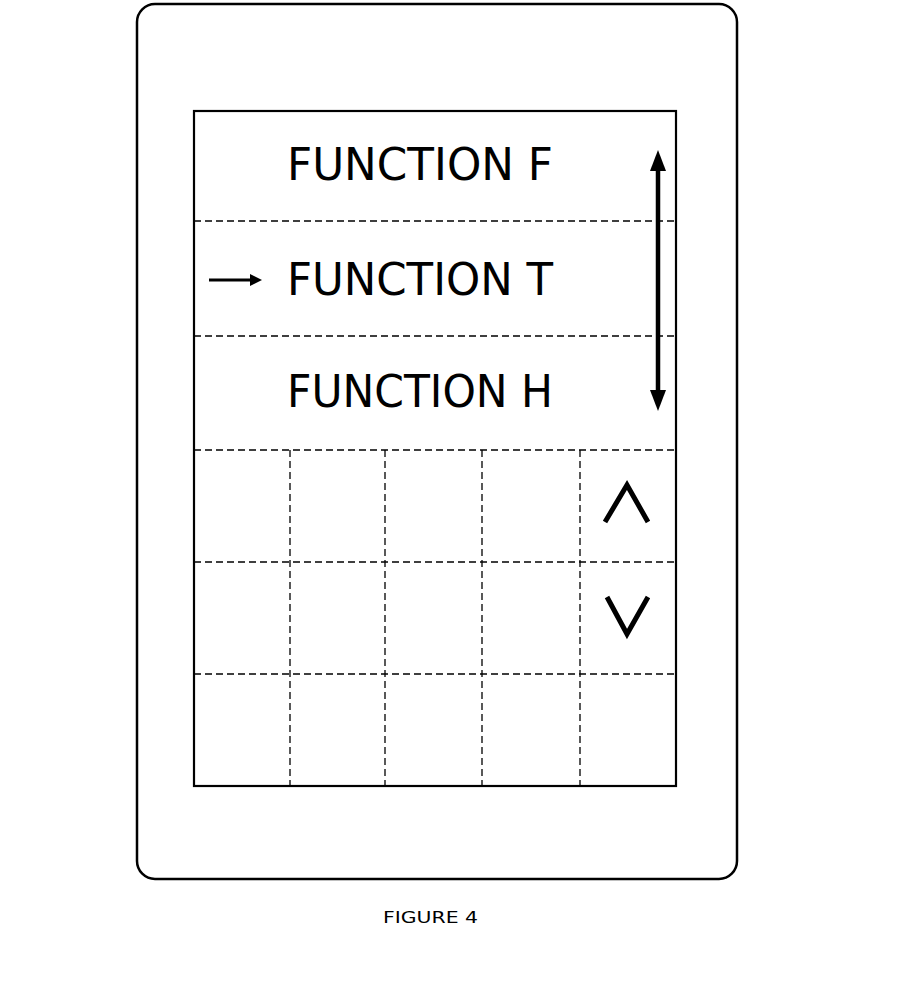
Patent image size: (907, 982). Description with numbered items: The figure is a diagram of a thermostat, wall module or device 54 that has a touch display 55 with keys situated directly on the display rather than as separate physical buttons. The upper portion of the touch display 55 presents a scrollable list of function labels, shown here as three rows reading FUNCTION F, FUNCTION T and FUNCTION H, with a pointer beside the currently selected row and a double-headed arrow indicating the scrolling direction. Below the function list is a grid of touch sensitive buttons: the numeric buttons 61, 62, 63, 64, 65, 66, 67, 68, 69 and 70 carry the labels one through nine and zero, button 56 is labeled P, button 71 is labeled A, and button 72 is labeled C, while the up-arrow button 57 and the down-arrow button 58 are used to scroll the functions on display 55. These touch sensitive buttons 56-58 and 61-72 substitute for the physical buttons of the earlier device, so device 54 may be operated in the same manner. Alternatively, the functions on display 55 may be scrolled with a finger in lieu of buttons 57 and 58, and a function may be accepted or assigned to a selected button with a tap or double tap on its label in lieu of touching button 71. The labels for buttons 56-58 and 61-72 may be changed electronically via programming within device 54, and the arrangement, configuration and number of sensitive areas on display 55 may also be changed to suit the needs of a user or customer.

The device 54 is at (775, 172).
The touch display 55 is at (677, 449).
The touch sensitive button 56 is at (538, 553).
The touch sensitive button 57 is at (632, 553).
The touch sensitive button 58 is at (626, 666).
The touch sensitive button 61 is at (252, 553).
The touch sensitive button 62 is at (344, 553).
The touch sensitive button 63 is at (438, 553).
The touch sensitive button 64 is at (252, 666).
The touch sensitive button 65 is at (344, 666).
The touch sensitive button 66 is at (438, 666).
The touch sensitive button 67 is at (250, 776).
The touch sensitive button 68 is at (342, 776).
The touch sensitive button 69 is at (436, 776).
The touch sensitive button 70 is at (530, 776).
The touch sensitive button 71 is at (530, 666).
The touch sensitive button 72 is at (628, 776).